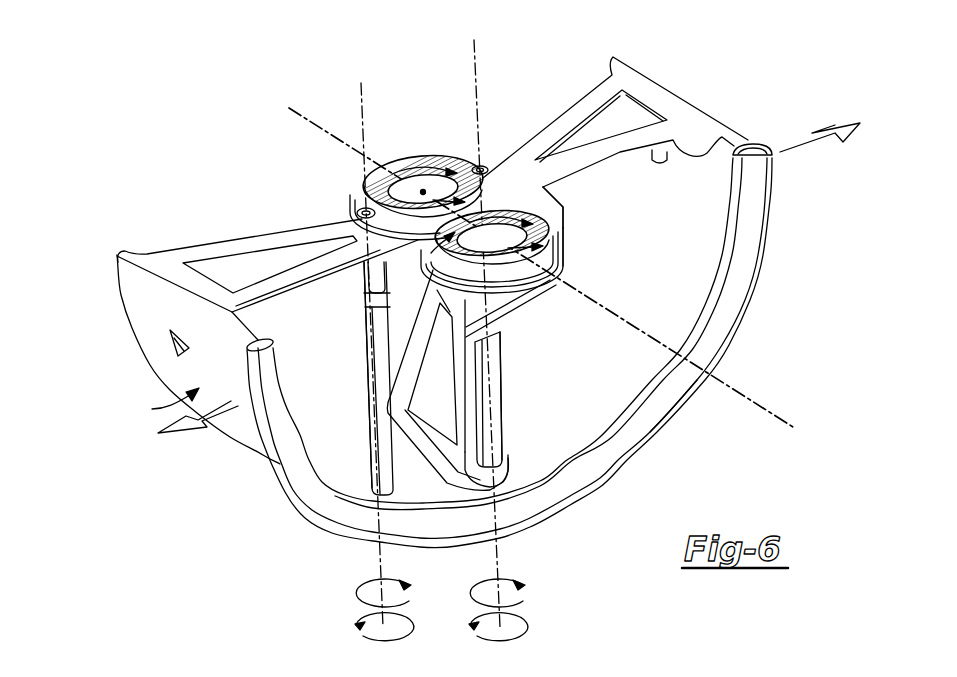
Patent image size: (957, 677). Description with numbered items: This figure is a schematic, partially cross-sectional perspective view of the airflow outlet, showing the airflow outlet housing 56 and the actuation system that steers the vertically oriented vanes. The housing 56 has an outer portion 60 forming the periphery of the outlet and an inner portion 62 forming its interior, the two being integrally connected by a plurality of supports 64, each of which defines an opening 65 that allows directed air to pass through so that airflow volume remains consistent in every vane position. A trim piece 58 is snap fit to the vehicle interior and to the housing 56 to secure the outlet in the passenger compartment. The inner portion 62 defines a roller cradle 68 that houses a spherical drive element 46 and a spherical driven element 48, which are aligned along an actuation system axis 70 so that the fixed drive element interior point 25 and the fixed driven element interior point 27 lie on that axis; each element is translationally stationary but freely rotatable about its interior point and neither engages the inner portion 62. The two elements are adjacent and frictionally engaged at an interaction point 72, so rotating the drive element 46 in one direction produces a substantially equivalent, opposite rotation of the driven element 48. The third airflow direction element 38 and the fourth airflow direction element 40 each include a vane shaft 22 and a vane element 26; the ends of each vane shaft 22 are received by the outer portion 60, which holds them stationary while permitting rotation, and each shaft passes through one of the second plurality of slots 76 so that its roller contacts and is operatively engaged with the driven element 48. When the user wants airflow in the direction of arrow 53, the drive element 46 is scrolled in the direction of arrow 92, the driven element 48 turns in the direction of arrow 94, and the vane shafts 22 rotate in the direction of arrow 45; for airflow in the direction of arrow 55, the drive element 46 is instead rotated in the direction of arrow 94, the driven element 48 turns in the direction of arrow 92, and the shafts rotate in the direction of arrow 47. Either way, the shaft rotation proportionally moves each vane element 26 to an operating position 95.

The vane shaft 22 is at (367, 272).
The drive element interior point 25 is at (555, 222).
The vane element 26 is at (385, 380).
The driven element interior point 27 is at (424, 189).
The third airflow direction element 38 is at (338, 378).
The fourth airflow direction element 40 is at (518, 371).
The arrow 45 is at (454, 610).
The drive element 46 is at (476, 249).
The arrow 47 is at (425, 333).
The driven element 48 is at (409, 204).
The arrow 53 is at (820, 146).
The arrow 55 is at (198, 428).
The airflow outlet housing 56 is at (164, 403).
The trim piece 58 is at (574, 499).
The outer portion 60 is at (668, 274).
The inner portion 62 is at (572, 241).
The supports 64 is at (226, 248).
The opening 65 is at (262, 262).
The roller cradle 68 is at (412, 234).
The actuation system axis 70 is at (772, 410).
The interaction point 72 is at (434, 249).
The second plurality of slots 76 is at (347, 211).
The arrow 92 is at (392, 236).
The arrow 94 is at (385, 170).
The operating position 95 is at (350, 447).